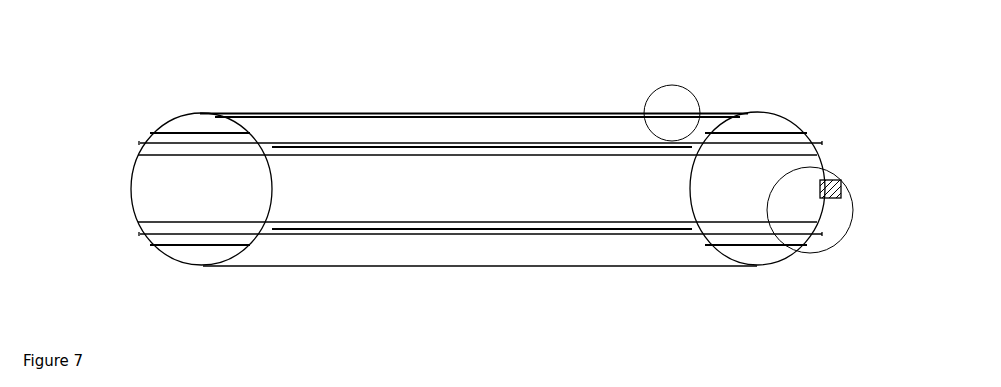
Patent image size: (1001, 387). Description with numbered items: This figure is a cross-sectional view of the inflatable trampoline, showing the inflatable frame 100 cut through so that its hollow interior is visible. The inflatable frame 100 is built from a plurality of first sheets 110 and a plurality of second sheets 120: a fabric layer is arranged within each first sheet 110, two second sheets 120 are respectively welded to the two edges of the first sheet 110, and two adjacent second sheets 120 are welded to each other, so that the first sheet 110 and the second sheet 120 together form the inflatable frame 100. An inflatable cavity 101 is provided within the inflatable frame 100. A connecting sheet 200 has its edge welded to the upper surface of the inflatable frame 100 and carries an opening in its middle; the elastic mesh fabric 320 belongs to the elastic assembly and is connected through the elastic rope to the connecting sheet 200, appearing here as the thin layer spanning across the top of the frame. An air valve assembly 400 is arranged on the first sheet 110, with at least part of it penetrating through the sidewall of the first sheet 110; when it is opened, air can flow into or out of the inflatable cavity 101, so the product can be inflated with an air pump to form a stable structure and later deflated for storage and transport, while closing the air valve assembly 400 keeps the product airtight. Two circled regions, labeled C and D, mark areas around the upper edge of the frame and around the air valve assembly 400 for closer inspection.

The inflatable frame 100 is at (407, 277).
The inflatable cavity 101 is at (153, 187).
The first sheet 110 is at (132, 210).
The second sheet 120 is at (148, 134).
The connecting sheet 200 is at (248, 112).
The elastic mesh fabric 320 is at (485, 111).
The air valve assembly 400 is at (832, 181).
The detail region C is at (700, 89).
The detail region D is at (842, 250).